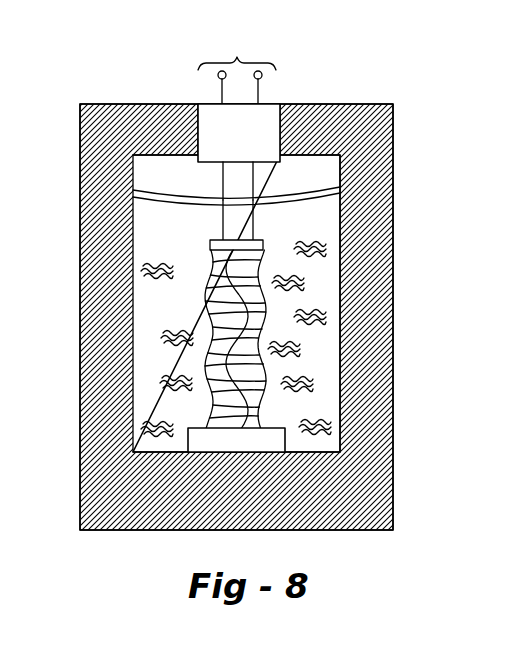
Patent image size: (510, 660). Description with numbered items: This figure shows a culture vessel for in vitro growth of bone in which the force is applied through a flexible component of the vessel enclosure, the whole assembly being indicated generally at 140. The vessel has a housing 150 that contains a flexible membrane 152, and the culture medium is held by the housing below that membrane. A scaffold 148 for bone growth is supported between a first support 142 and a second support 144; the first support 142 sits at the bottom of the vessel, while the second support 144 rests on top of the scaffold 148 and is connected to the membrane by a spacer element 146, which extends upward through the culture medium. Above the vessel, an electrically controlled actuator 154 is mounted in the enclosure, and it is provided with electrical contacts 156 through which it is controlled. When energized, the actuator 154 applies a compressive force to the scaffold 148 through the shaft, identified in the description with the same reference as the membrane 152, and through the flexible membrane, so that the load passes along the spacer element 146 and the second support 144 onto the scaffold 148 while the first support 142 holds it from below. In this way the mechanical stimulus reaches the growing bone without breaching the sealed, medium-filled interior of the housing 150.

The housing / insulated enclosure 140 is at (350, 104).
The first support 142 is at (236, 440).
The second support 144 is at (210, 246).
The spacer element 146 is at (237, 224).
The scaffold 148 is at (213, 329).
The housing 150 is at (274, 204).
The flexible membrane 152 is at (236, 182).
The electrically controlled actuator 154 is at (239, 133).
The electrical contacts 156 is at (237, 68).